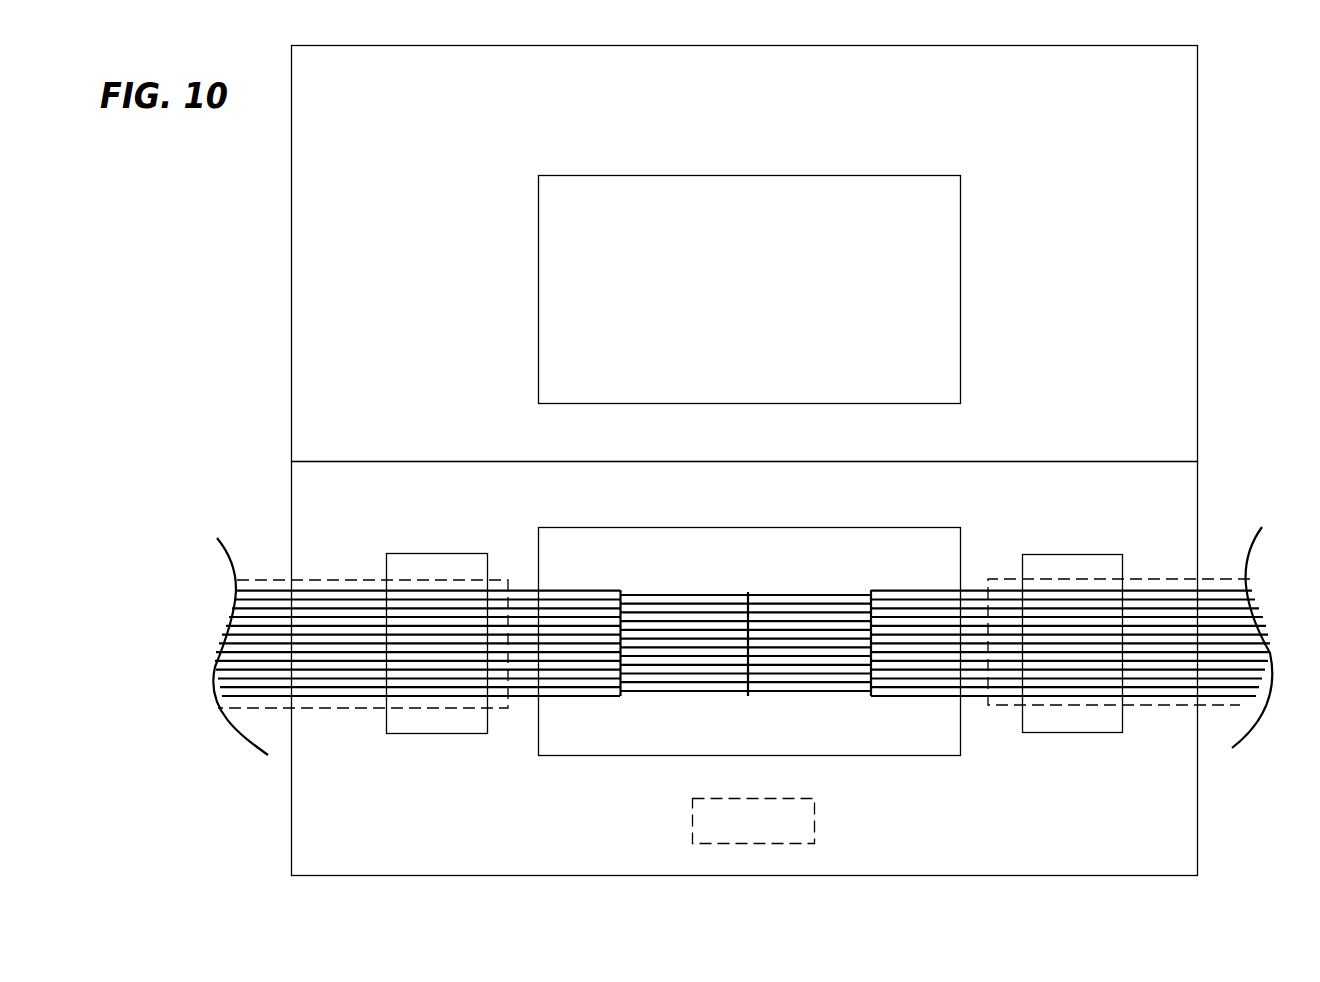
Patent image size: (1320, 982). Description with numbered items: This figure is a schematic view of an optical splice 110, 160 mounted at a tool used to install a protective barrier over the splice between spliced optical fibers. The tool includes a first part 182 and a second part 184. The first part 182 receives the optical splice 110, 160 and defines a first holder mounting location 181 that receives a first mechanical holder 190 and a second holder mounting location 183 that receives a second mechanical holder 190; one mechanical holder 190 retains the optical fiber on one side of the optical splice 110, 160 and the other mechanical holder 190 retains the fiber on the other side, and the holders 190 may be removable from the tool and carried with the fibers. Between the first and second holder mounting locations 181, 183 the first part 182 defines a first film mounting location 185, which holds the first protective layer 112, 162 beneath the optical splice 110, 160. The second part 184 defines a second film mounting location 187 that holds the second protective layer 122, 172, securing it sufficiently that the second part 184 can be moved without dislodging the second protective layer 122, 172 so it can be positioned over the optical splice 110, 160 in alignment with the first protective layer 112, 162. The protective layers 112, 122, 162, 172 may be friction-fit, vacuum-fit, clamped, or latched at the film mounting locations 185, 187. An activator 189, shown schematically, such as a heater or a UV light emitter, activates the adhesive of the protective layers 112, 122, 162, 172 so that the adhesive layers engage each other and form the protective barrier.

The optical splice 110 is at (742, 587).
The optical splice 160 is at (750, 590).
The first protective layer 112 is at (767, 675).
The first protective layer 162 is at (866, 757).
The second protective layer 122 is at (750, 259).
The second protective layer 172 is at (802, 175).
The first holder mounting location 181 is at (425, 795).
The first part 182 is at (1197, 836).
The second holder mounting location 183 is at (1097, 724).
The second part 184 is at (1197, 202).
The first film mounting location 185 is at (721, 649).
The second film mounting location 187 is at (750, 250).
The activator 189 is at (705, 822).
The mechanical holder 190 is at (770, 691).